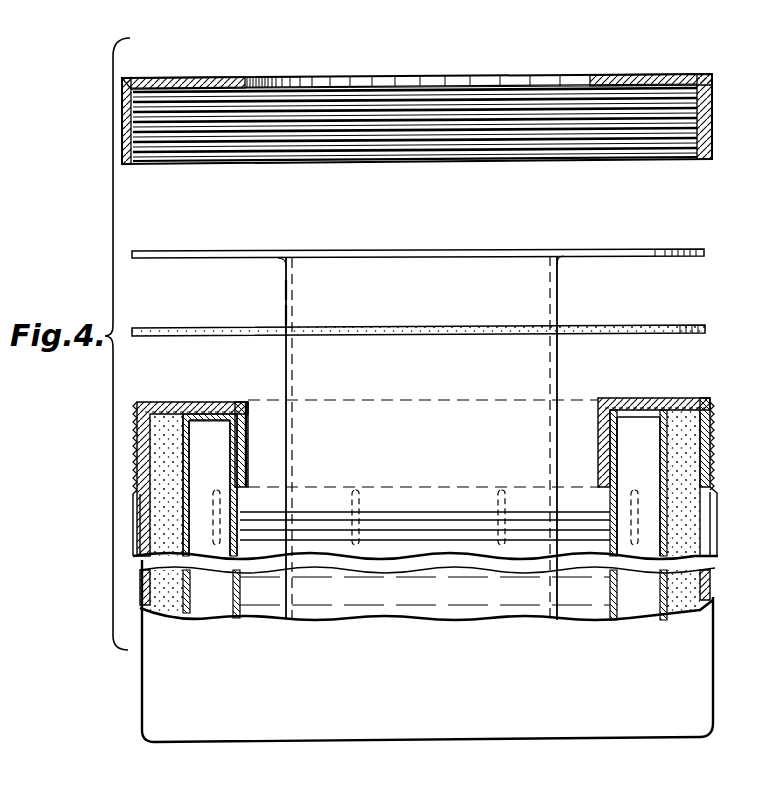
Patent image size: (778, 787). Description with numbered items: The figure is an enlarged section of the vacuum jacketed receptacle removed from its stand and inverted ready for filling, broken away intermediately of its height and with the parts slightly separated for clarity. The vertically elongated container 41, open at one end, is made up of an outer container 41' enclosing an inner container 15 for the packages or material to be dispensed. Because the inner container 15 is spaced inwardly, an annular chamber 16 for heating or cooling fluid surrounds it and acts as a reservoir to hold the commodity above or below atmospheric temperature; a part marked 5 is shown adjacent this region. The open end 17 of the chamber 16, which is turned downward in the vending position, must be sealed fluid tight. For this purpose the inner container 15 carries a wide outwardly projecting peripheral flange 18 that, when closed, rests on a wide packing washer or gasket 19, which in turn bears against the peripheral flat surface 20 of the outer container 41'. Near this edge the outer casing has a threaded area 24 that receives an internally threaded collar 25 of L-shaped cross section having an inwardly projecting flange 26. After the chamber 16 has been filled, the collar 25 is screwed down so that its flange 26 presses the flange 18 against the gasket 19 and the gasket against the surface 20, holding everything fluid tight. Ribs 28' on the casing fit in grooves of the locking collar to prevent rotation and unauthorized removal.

The lower plate support 5 is at (286, 315).
The inner container 15 is at (285, 290).
The chamber 16 is at (265, 530).
The open end 17 is at (292, 266).
The peripheral flange 18 is at (193, 250).
The packing washer or gasket 19 is at (132, 328).
The peripheral flat surface 20 is at (185, 402).
The threaded area 24 is at (137, 452).
The internally threaded collar 25 is at (148, 150).
The inwardly projecting flange 26 is at (200, 82).
The ribs 28' is at (84, 523).
The container 41 is at (385, 651).
The serrated wall 41' is at (99, 446).